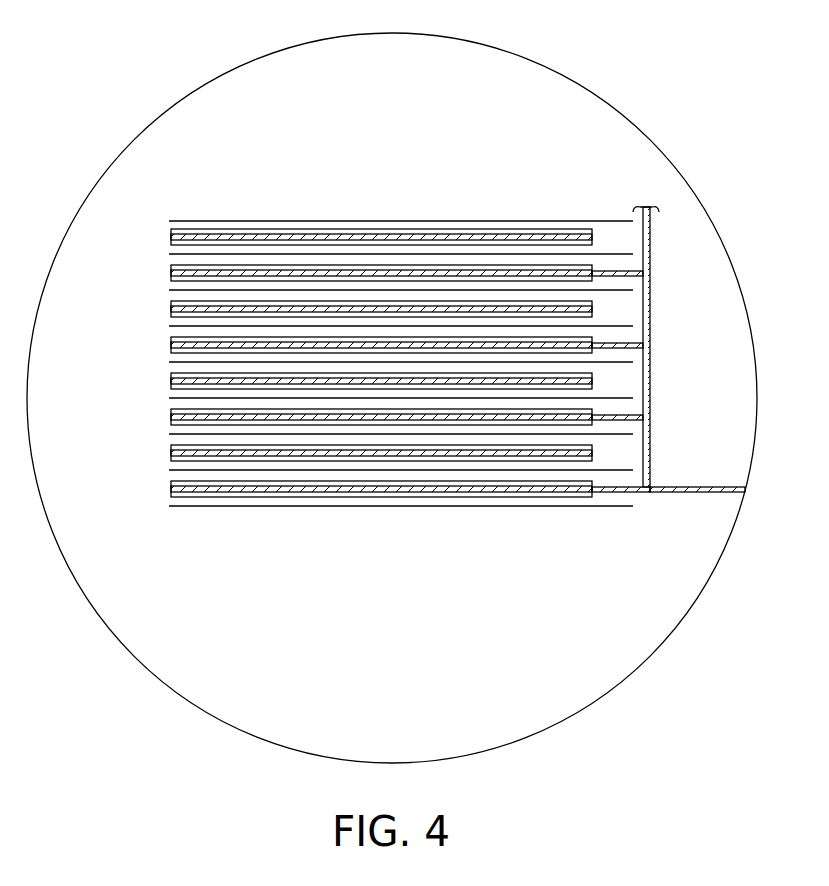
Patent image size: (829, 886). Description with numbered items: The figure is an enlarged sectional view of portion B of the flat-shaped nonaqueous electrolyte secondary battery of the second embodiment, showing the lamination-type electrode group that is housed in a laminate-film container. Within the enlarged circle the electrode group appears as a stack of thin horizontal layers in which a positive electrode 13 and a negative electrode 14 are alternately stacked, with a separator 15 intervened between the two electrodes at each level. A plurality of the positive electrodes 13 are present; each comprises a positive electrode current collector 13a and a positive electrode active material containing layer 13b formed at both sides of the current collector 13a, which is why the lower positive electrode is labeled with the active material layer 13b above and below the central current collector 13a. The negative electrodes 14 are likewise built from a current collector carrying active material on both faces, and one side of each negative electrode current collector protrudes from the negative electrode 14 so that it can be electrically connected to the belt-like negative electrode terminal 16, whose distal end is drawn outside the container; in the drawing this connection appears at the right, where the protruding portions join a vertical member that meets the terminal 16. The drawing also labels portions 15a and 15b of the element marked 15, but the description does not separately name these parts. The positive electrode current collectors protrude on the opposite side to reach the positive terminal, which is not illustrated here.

The positive electrode 13 is at (318, 369).
The positive electrode current collector 13a is at (171, 453).
The positive electrode active material containing layer 13b is at (171, 447).
The negative electrode 14 is at (462, 221).
The separator 15 is at (395, 398).
The conductive layer of electrode 15 / lead-out portion 15a is at (621, 270).
The insulating layer of electrode 15 15b is at (172, 483).
The negative electrode terminal 16 is at (697, 493).
The portion B is at (645, 665).